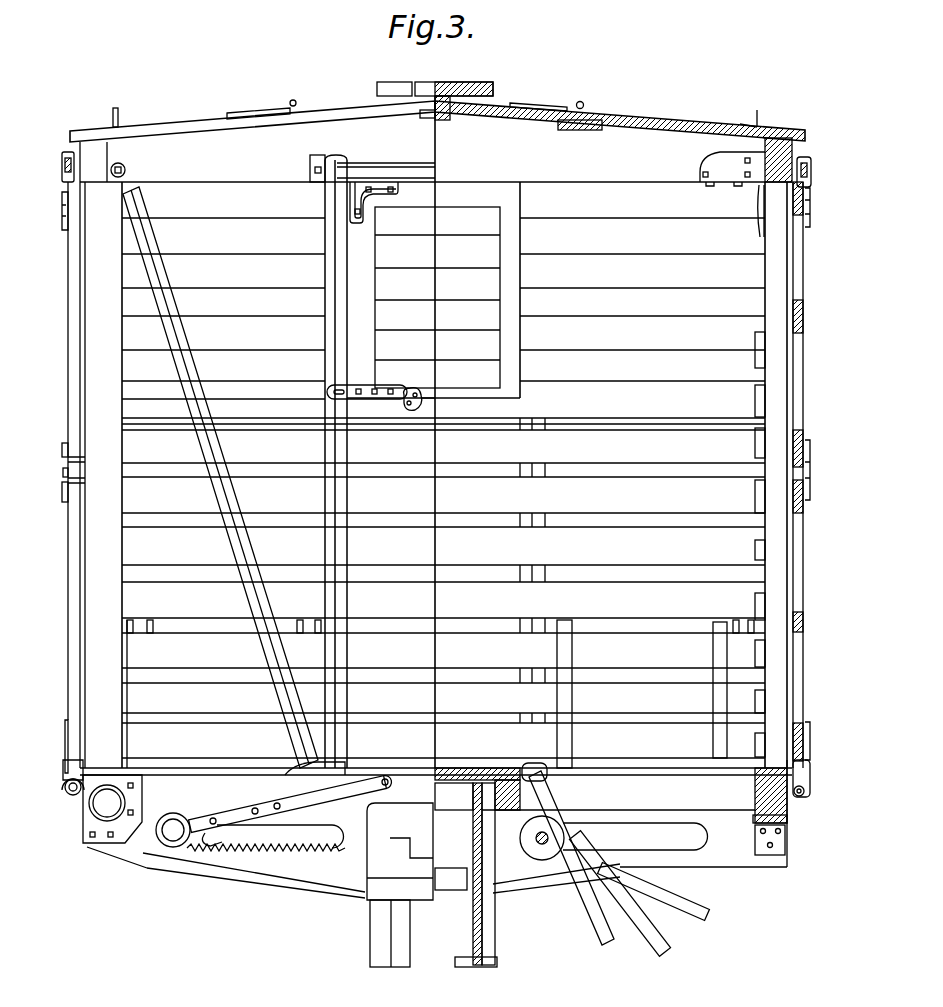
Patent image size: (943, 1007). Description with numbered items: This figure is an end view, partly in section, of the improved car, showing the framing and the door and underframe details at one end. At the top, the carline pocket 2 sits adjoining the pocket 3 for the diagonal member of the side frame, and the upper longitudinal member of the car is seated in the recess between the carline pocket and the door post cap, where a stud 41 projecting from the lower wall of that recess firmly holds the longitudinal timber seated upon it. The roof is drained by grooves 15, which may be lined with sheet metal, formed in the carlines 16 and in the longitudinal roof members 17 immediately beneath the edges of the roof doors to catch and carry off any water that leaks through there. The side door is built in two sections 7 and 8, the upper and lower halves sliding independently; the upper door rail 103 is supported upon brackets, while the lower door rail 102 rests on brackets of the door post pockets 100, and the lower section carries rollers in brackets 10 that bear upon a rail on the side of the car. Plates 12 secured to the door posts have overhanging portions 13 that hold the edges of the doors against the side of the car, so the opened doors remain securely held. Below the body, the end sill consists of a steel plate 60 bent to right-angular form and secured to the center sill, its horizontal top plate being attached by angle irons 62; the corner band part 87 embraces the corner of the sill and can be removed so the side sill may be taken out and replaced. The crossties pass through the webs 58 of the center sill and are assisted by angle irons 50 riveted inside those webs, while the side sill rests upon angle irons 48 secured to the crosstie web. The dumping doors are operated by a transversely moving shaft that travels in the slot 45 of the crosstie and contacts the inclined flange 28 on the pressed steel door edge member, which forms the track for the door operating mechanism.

The carline pocket 2 is at (742, 161).
The pocket for the diagonal member of the side frame 3 is at (760, 184).
The upper door section 7 is at (74, 322).
The lower door section 8 is at (74, 608).
The roller brackets 10 is at (68, 206).
The plates 12 is at (66, 472).
The overhanging portions 13 is at (64, 443).
The grooves 15 is at (580, 124).
The carlines 16 is at (620, 133).
The longitudinal roof members 17 is at (568, 122).
The inclined flange 28 is at (590, 907).
The stud 41 is at (756, 822).
The slot in the crosstie 45 is at (447, 837).
The angle irons 48 is at (786, 852).
The angle irons 50 is at (451, 879).
The webs 58 is at (473, 927).
The steel plate of the end sill 60 is at (290, 804).
The angle irons 62 is at (473, 797).
The corner band part 87 is at (105, 845).
The door post pockets 100 is at (800, 803).
The lower door rail 102 is at (70, 798).
The upper door rail 103 is at (72, 168).